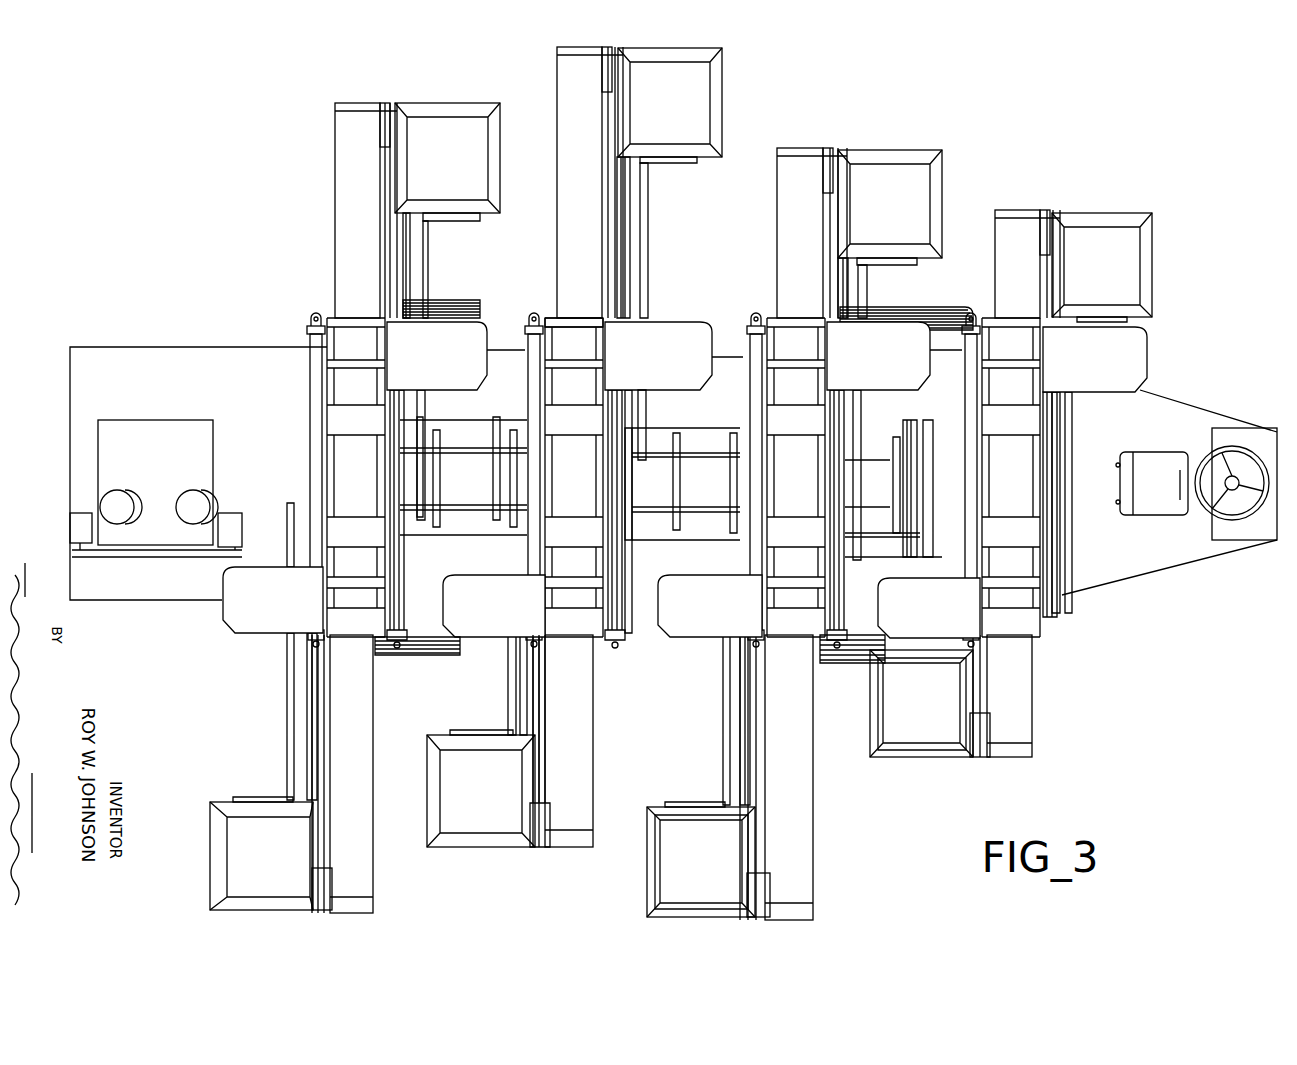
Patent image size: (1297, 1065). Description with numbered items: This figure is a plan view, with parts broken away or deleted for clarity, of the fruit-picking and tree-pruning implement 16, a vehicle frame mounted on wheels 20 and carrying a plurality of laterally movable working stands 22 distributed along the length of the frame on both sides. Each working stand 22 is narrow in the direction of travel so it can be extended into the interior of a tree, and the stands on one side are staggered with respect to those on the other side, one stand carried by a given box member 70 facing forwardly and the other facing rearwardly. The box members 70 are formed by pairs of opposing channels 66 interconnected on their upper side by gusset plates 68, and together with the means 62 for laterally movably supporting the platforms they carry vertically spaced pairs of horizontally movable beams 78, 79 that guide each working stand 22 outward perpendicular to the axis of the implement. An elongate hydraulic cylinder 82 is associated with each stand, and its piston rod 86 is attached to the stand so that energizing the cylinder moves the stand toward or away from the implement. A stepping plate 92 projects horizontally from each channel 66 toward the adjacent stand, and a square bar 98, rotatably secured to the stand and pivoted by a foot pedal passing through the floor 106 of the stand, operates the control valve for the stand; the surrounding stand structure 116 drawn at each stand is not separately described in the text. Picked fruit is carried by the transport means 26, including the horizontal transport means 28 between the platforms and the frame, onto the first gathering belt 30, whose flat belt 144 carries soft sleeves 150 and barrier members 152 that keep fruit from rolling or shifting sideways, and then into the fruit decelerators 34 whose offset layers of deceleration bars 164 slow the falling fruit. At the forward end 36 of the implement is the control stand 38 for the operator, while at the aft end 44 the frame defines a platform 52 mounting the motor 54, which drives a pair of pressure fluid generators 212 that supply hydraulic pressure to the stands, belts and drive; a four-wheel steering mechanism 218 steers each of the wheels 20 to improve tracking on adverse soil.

The fruit-picking and tree-pruning implement 16 is at (1100, 145).
The wheels 20 is at (430, 657).
The working stands 22 is at (463, 105).
The transport means 26 is at (725, 428).
The horizontal transport means 28 is at (545, 783).
The first gathering belt 30 is at (640, 527).
The fruit decelerators 34 is at (903, 554).
The forward end 36 is at (1278, 440).
The control stand 38 is at (1177, 542).
The aft end 44 is at (70, 470).
The platform 52 is at (238, 440).
The motor 54 is at (160, 425).
The means for laterally movably supporting working platforms 62 is at (548, 300).
The channels 66 is at (600, 332).
The gusset plates 68 is at (575, 415).
The box members 70 is at (773, 640).
The movable beam 78 is at (815, 850).
The movable beam 79 is at (333, 237).
The hydraulic cylinder 82 is at (310, 394).
The piston rod 86 is at (625, 260).
The stepping plate 92 is at (472, 372).
The square bar 98 is at (648, 294).
The floor 106 is at (686, 872).
The carriage frame 116 is at (442, 104).
The flat belt 144 is at (687, 455).
The soft sleeves 150 is at (440, 481).
The barrier members 152 is at (460, 447).
The deceleration bars 164 is at (917, 432).
The pressure fluid generators 212 is at (72, 528).
The four-wheel steering mechanism 218 is at (1247, 525).